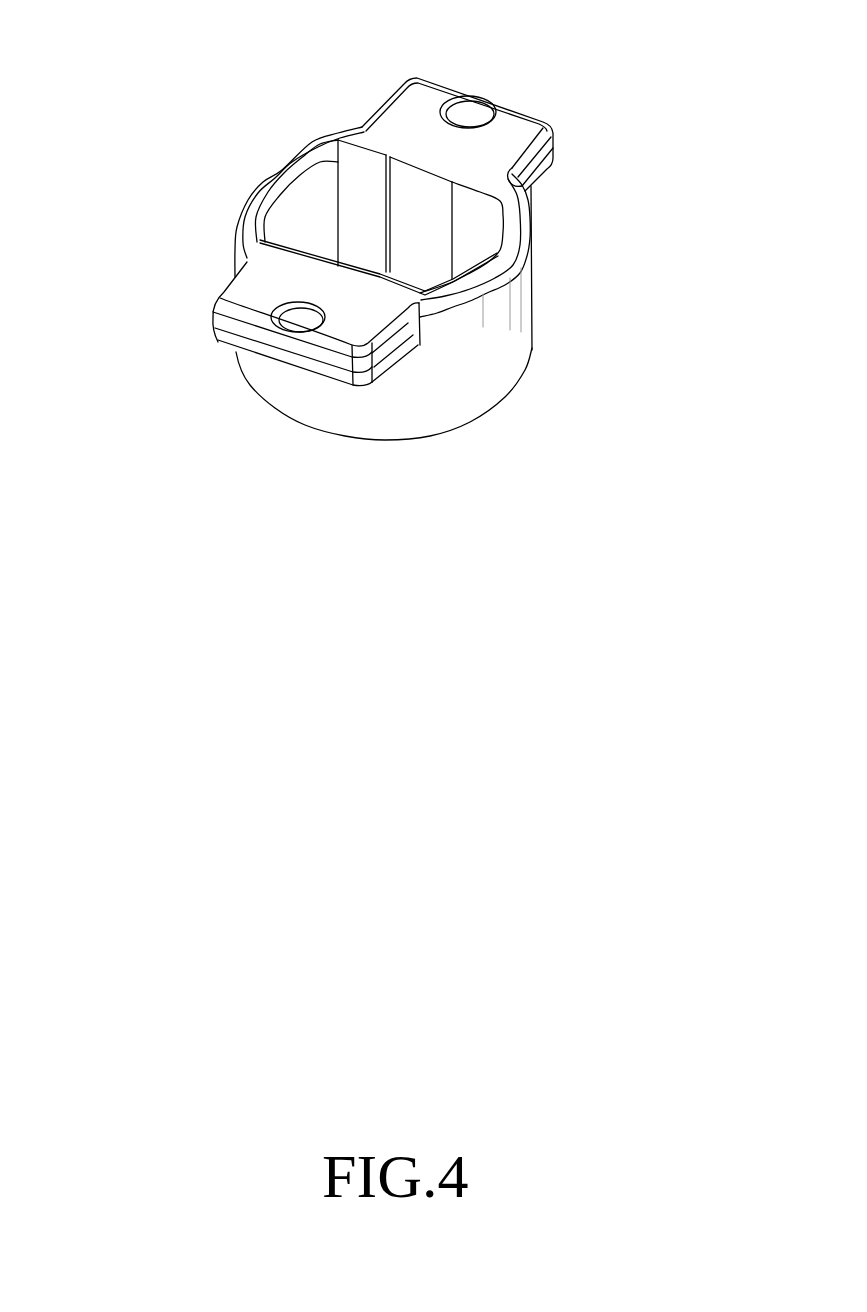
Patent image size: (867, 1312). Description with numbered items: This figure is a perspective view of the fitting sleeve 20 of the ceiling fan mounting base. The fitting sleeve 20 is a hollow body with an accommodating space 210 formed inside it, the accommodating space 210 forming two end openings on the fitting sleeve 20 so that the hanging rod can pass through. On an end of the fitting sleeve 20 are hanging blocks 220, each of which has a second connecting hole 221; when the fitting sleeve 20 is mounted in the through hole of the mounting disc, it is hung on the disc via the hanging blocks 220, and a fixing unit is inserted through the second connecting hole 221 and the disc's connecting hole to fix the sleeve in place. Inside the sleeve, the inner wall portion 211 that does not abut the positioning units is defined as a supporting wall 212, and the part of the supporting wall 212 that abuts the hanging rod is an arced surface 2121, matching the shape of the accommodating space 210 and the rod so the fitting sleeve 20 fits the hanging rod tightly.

The fitting sleeve 20 is at (532, 325).
The accommodating space 210 is at (425, 257).
The side wall 211 is at (283, 184).
The supporting wall 212 is at (368, 140).
The arced surface 2121 is at (412, 163).
The hanging block 220 is at (537, 142).
The second connecting hole 221 is at (497, 106).